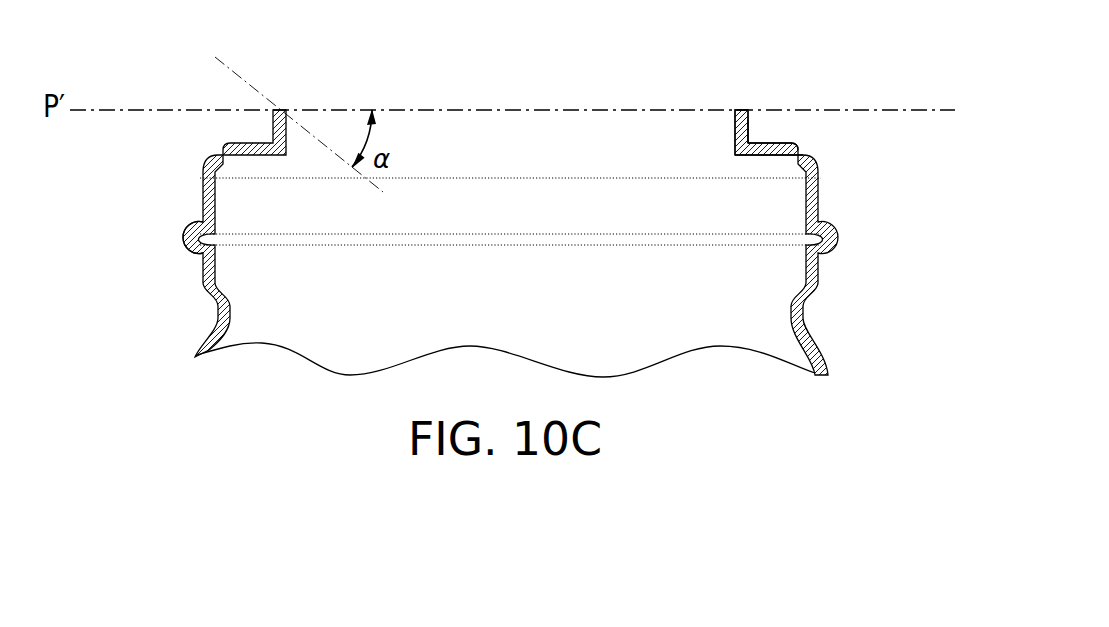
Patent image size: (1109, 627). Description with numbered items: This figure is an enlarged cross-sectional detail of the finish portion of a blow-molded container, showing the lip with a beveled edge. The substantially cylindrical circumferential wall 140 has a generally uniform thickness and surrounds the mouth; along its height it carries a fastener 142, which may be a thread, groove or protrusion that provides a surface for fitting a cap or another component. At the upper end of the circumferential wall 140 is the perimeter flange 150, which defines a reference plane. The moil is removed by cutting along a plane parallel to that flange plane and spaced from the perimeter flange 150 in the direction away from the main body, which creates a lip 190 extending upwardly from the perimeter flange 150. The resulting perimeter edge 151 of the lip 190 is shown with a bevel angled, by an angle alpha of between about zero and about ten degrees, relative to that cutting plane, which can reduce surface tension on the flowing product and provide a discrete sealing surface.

The circumferential wall 140 is at (203, 198).
The fastener 142 is at (185, 239).
The perimeter flange 150 is at (786, 143).
The perimeter edge 151 is at (738, 110).
The lip 190 is at (748, 129).